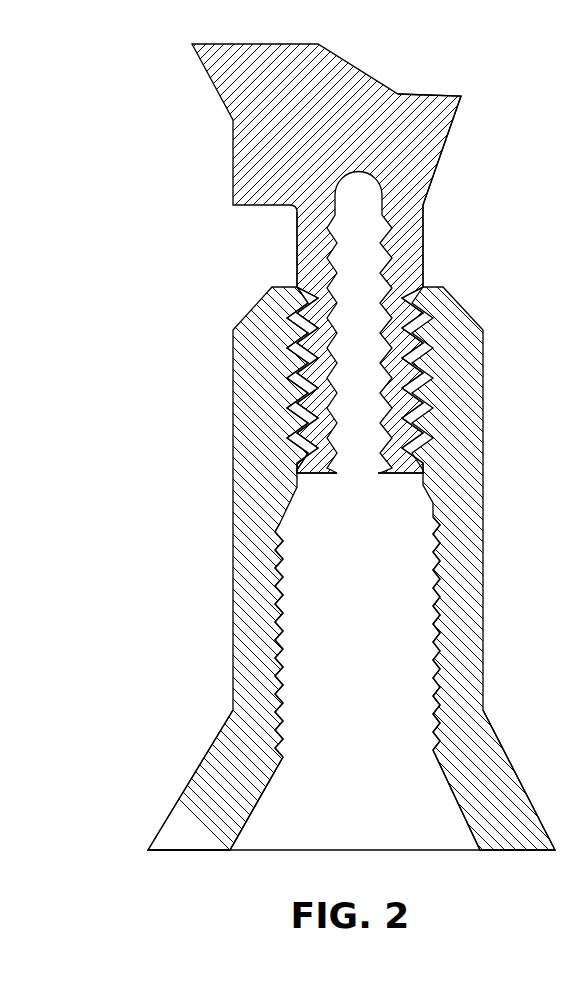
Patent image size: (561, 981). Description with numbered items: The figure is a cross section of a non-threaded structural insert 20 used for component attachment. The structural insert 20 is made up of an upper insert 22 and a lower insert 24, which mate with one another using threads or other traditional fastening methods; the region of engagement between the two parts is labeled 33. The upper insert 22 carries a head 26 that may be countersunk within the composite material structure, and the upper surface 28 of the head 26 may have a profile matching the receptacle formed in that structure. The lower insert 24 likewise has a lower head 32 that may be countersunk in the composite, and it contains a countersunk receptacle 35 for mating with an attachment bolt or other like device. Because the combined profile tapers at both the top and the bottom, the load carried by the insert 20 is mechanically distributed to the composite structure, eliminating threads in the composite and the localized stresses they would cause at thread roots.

The structural insert 20 is at (476, 72).
The upper insert 22 is at (423, 232).
The lower insert 24 is at (483, 545).
The head 26 is at (233, 153).
The upper surface 28 is at (437, 96).
The lower head 32 is at (200, 763).
The thread engagement 33 is at (298, 300).
The countersunk receptacle 35 is at (346, 533).